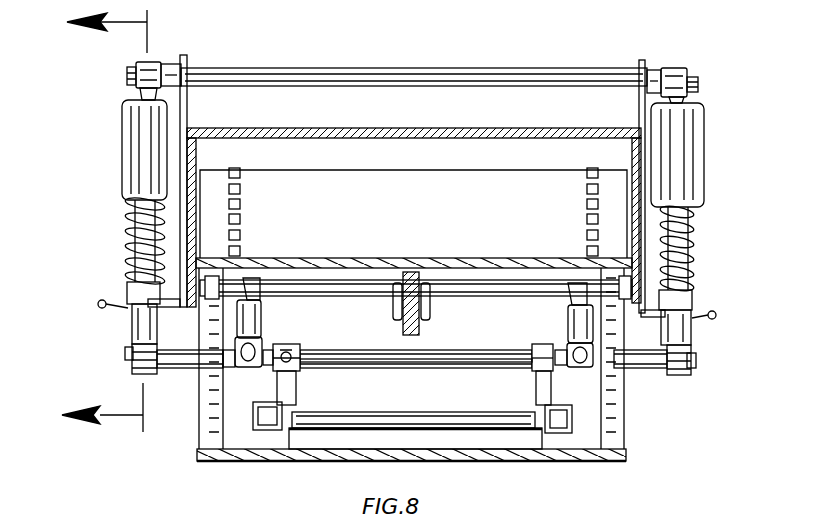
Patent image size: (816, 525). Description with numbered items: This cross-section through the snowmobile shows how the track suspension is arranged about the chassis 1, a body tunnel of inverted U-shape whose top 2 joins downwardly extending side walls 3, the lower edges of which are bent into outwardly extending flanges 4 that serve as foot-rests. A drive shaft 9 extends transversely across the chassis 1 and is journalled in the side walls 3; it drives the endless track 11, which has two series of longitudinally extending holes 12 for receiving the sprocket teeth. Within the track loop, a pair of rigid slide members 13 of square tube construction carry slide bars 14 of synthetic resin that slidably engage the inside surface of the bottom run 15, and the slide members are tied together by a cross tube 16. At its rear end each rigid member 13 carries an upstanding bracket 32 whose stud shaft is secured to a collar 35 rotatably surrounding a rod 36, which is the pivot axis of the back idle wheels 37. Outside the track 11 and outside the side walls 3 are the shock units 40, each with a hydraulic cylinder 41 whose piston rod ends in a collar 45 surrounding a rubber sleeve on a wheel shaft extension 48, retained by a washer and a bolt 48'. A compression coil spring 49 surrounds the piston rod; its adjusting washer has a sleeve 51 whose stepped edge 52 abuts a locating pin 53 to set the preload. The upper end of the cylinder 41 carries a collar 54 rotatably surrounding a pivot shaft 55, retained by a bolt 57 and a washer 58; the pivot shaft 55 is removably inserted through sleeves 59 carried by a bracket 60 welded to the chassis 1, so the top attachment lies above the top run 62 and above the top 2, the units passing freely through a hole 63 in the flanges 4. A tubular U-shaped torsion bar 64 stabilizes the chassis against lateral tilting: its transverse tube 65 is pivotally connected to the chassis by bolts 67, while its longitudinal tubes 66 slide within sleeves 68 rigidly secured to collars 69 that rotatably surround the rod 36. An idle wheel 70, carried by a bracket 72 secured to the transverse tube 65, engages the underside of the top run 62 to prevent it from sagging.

The chassis 1 is at (381, 125).
The top 2 is at (438, 132).
The side walls 3 is at (132, 192).
The flanges 4 is at (98, 306).
The drive shaft 9 is at (119, 221).
The endless track 11 is at (435, 467).
The holes 12 is at (242, 218).
The rigid slide members 13 is at (250, 420).
The slide bar 14 is at (275, 442).
The bottom run 15 is at (494, 457).
The cross tube 16 is at (402, 414).
The bracket 32 is at (292, 381).
The collar 35 is at (300, 349).
The rod 36 is at (377, 361).
The back idle wheels 37 is at (202, 418).
The shock unit 40 is at (104, 178).
The cylinder 41 is at (125, 132).
The collar 45 is at (143, 368).
The wheel shaft extension 48 is at (423, 391).
The bolt 48' is at (683, 362).
The compression coil spring 49 is at (133, 247).
The sleeve 51 is at (695, 302).
The stepped edge 52 is at (120, 303).
The locating pin 53 is at (125, 352).
The collar 54 is at (152, 64).
The pivot shaft 55 is at (318, 70).
The bolt 57 is at (127, 77).
The washer 58 is at (128, 71).
The sleeve 59 is at (173, 68).
The bracket 60 is at (186, 122).
The top run 62 is at (447, 262).
The hole 63 is at (140, 316).
The torsion bar 64 is at (341, 275).
The transverse tube 65 is at (377, 277).
The longitudinal tubes 66 is at (303, 275).
The bolts 67 is at (677, 255).
The sleeves 68 is at (263, 323).
The collars 69 is at (235, 364).
The idle wheel 70 is at (420, 342).
The bracket 72 is at (434, 322).